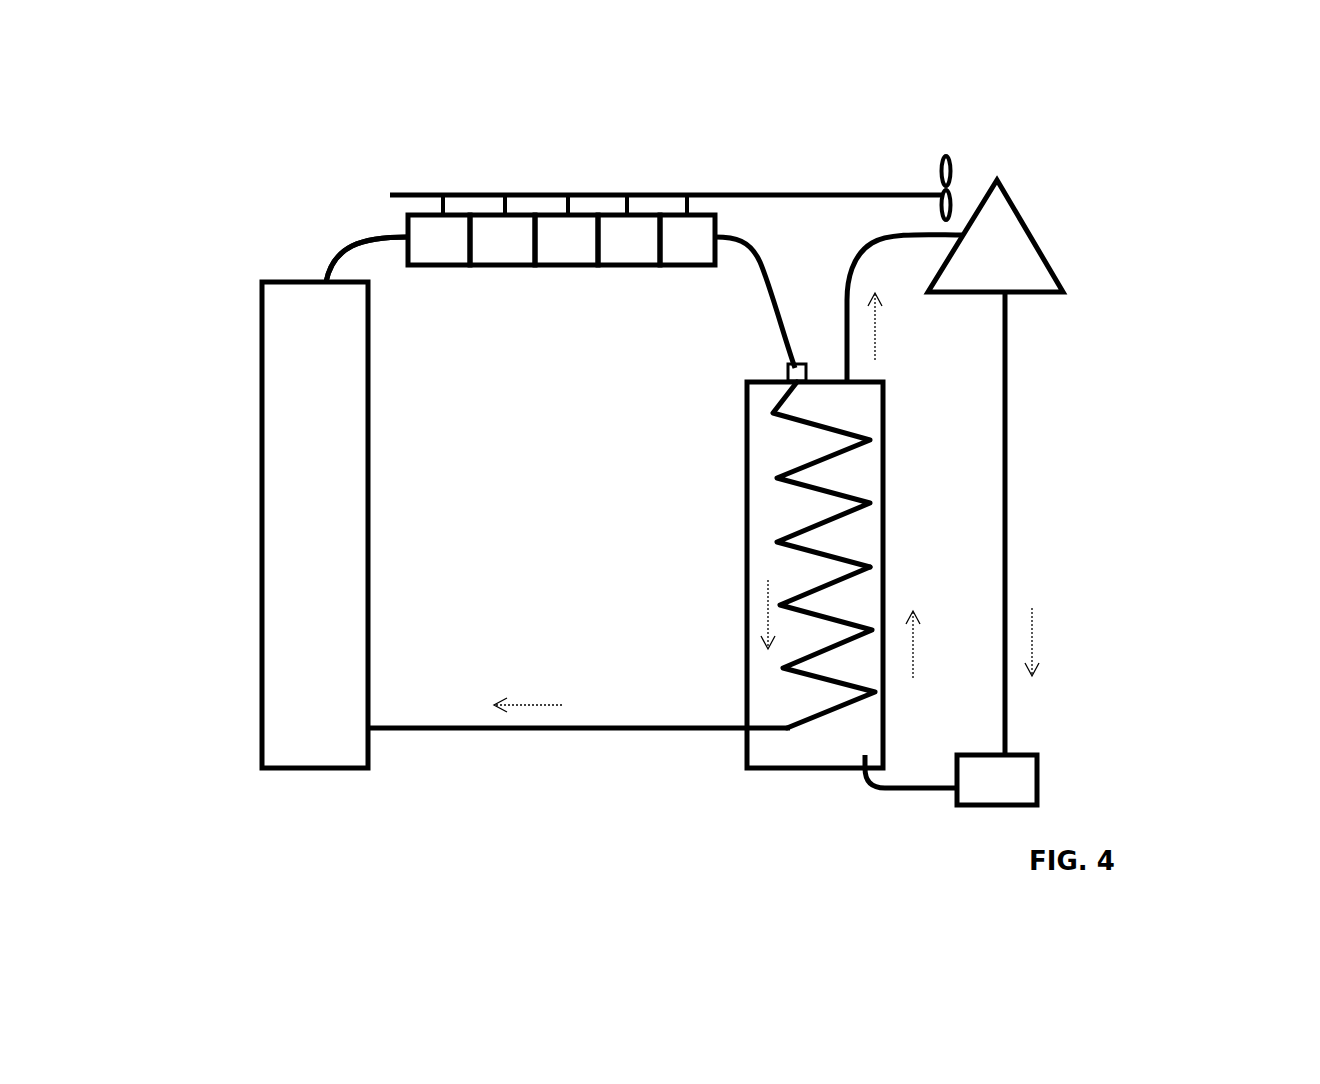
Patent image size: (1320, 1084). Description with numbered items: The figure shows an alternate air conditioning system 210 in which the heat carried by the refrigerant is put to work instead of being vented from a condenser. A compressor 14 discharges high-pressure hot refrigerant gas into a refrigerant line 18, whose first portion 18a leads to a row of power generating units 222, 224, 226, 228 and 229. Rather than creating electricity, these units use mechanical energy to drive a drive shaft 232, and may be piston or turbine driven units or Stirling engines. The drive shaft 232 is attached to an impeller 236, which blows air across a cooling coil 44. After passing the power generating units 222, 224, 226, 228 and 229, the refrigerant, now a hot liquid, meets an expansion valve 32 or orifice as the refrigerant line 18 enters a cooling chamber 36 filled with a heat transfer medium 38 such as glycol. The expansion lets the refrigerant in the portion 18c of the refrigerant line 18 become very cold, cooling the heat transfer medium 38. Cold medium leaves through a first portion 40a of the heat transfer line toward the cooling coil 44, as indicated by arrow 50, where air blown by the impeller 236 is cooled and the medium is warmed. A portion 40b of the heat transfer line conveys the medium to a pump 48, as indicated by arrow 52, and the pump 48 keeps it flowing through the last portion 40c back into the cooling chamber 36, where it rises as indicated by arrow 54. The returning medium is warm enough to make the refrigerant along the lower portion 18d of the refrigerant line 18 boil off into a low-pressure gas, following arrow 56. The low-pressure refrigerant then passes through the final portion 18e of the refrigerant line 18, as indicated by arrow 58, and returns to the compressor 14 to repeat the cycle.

The compressor 14 is at (300, 474).
The refrigerant line 18 is at (327, 258).
The refrigerant line portion 18a is at (347, 246).
The portion of the refrigerant line 18c is at (788, 397).
The lower portion of the refrigerant line 18d is at (783, 668).
The final portion of the refrigerant line 18e is at (520, 735).
The power generating unit 222 is at (445, 243).
The power generating unit 224 is at (508, 240).
The power generating unit 226 is at (575, 243).
The power generating unit 228 is at (635, 247).
The power generating unit 229 is at (697, 240).
The drive shaft 232 is at (732, 192).
The impeller 236 is at (955, 172).
The cooling coil 44 is at (1023, 248).
The first portion of the heat transfer line 40a is at (847, 307).
The portion of the heat transfer line 40b is at (1010, 410).
The last portion of the heat transfer line 40c is at (913, 788).
The pump 48 is at (1020, 773).
The cooling chamber 36 is at (745, 543).
The expansion valve 32 is at (773, 372).
The heat transfer medium 38 is at (762, 502).
The arrow 50 is at (880, 340).
The arrow 52 is at (1035, 630).
The arrow 54 is at (917, 652).
The arrow 56 is at (767, 602).
The arrow 58 is at (535, 705).
The air conditioning system 210 is at (1147, 267).